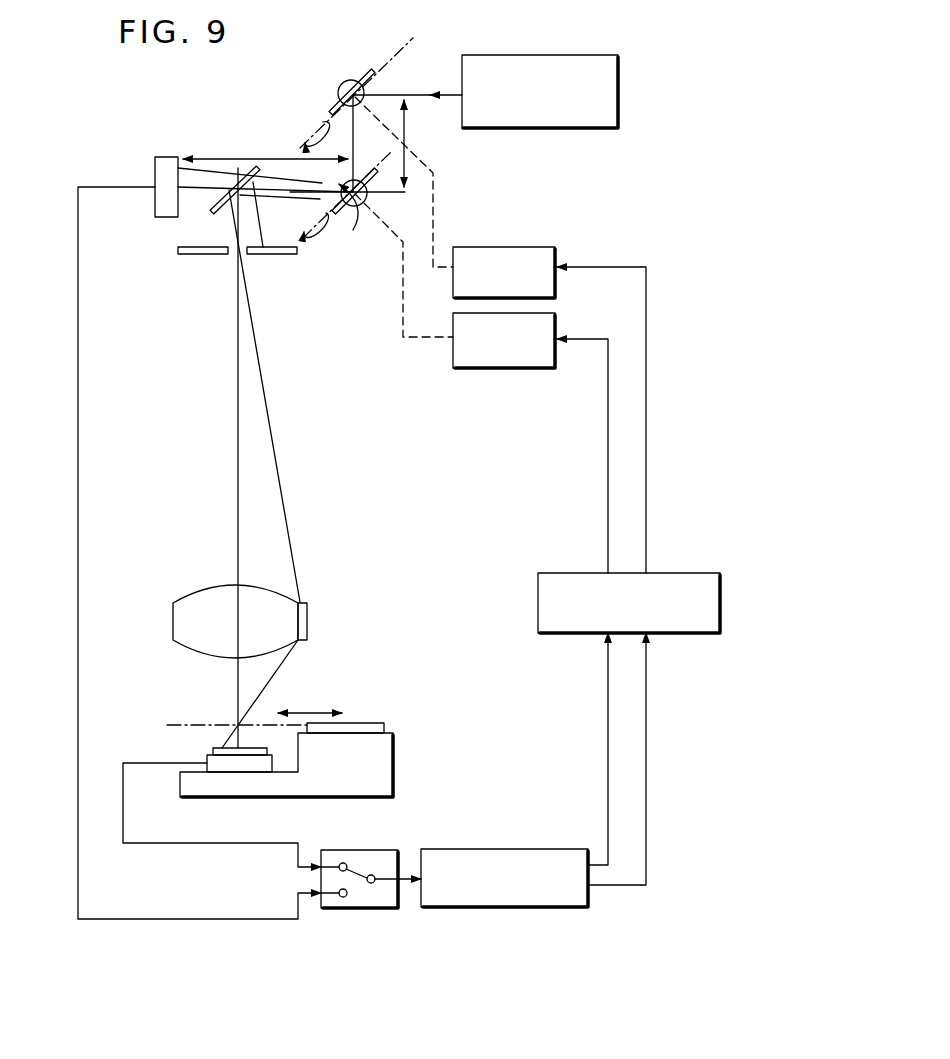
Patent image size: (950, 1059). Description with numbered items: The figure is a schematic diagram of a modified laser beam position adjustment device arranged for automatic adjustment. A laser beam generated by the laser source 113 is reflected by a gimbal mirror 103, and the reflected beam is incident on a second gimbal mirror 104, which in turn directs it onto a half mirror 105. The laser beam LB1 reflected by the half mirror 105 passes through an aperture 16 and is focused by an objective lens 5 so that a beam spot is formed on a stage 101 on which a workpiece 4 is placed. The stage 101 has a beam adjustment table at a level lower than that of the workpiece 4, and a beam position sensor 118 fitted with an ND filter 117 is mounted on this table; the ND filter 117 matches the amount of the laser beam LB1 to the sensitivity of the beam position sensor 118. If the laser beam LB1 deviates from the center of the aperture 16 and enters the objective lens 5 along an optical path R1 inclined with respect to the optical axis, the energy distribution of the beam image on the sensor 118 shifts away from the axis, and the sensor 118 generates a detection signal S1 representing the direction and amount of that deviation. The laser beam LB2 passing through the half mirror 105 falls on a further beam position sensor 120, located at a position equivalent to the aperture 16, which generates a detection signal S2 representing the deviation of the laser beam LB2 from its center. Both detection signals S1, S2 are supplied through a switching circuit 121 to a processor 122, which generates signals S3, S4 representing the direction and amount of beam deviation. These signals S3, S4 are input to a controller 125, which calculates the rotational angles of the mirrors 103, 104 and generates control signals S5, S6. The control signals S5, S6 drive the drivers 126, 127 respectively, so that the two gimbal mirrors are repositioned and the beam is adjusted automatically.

The gimbal mirror 103 is at (370, 72).
The gimbal mirror 104 is at (353, 217).
The half mirror 105 is at (214, 208).
The laser source 113 is at (563, 55).
The beam position sensor 120 is at (168, 157).
The driver 126 is at (521, 247).
The driver 127 is at (523, 364).
The controller 125 is at (662, 580).
The aperture 16 is at (243, 259).
The laser beam LB1 is at (238, 427).
The laser beam LB2 is at (202, 186).
The optical path R1 is at (267, 417).
The objective lens 5 is at (203, 597).
The workpiece 4 is at (363, 725).
The stage 101 is at (385, 758).
The ND filter 117 is at (213, 750).
The beam position sensor 118 is at (208, 762).
The switching circuit 121 is at (373, 857).
The processor 122 is at (497, 857).
The detection signal S1 is at (148, 847).
The detection signal S2 is at (77, 865).
The signal S3 is at (608, 785).
The signal S4 is at (646, 780).
The control signal S5 is at (608, 462).
The control signal S6 is at (648, 458).